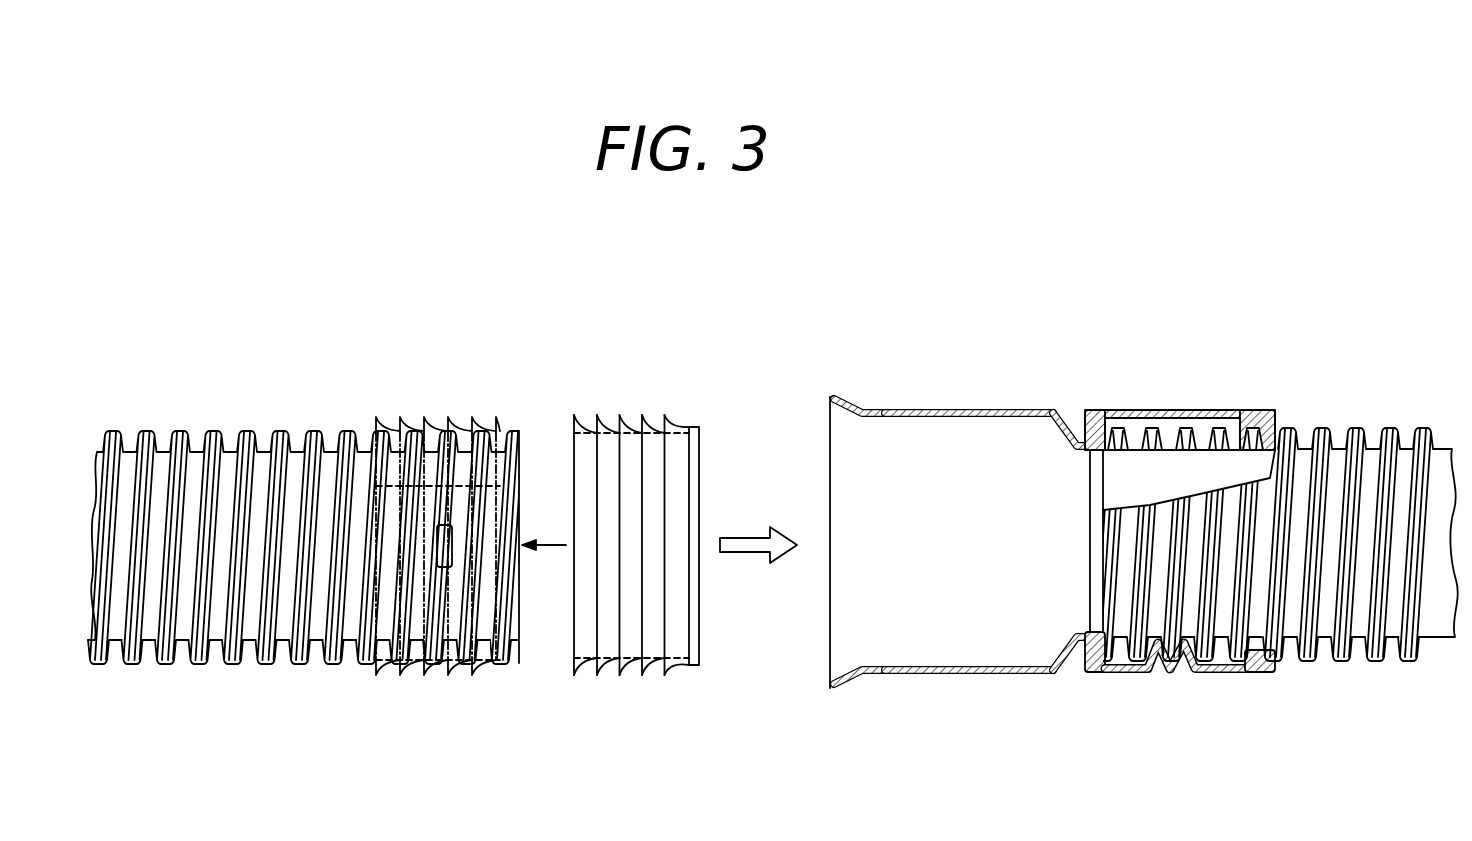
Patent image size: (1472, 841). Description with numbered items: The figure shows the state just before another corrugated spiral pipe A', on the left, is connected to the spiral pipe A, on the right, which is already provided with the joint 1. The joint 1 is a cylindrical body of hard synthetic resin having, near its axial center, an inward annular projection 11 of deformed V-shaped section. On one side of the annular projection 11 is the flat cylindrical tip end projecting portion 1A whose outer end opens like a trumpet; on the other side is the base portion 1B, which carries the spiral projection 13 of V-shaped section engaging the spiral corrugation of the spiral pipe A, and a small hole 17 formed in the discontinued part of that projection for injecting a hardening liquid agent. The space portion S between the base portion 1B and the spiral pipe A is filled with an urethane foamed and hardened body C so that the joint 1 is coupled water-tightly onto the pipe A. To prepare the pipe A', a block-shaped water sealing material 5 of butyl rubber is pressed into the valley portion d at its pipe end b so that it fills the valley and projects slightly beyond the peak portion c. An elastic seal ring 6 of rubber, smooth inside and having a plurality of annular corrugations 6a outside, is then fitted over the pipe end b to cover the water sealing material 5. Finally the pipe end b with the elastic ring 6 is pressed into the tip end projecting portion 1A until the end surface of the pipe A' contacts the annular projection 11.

The corrugated spiral pipe A' is at (313, 532).
The spiral pipe A is at (1274, 482).
The peak portion c is at (317, 430).
The pipe end b is at (386, 430).
The valley portion d is at (437, 430).
The water sealing material 5 is at (446, 545).
The elastic seal ring 6 is at (636, 532).
The annular corrugations 6a is at (676, 676).
The joint 1 is at (960, 497).
The tip end projecting portion 1A is at (902, 409).
The base portion 1B is at (1180, 543).
The annular projection 11 is at (1072, 410).
The small hole 17 is at (1170, 410).
The space portion S is at (1112, 673).
The spiral projection 13 is at (1185, 673).
The urethane foamed and hardened body C is at (1225, 673).